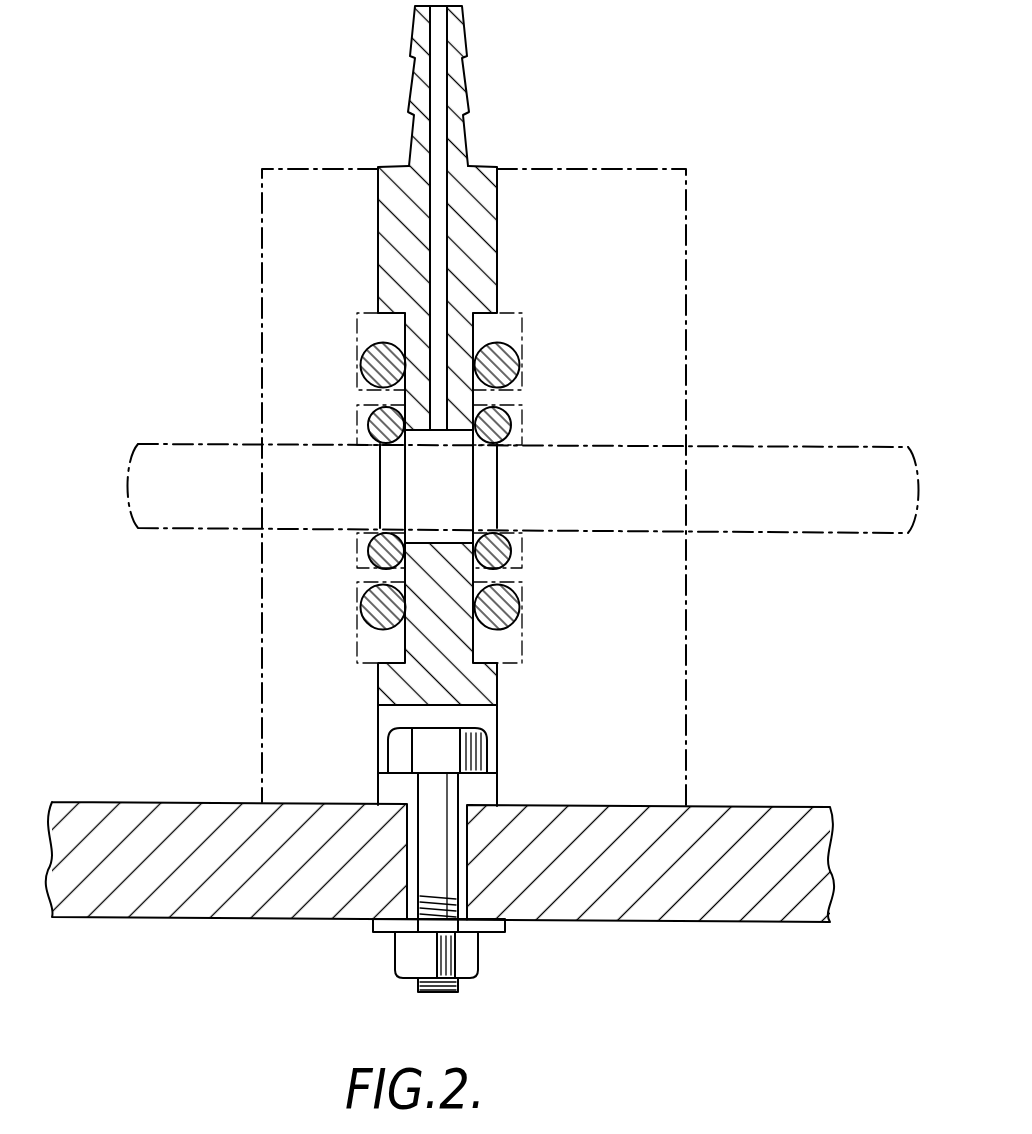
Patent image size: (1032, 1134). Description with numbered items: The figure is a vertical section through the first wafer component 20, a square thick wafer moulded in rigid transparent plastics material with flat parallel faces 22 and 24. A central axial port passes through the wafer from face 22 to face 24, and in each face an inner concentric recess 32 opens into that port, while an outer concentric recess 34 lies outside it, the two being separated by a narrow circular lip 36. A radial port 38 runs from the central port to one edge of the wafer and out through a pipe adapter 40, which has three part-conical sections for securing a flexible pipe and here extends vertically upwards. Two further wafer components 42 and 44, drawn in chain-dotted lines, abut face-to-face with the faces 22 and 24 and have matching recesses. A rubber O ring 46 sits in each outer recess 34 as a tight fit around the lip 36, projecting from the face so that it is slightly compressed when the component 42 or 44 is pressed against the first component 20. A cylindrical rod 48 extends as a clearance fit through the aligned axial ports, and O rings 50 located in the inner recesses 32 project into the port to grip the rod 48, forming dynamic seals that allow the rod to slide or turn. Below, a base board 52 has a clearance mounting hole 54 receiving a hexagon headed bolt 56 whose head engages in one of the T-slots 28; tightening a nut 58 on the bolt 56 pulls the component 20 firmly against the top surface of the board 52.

The first wafer component 20 is at (498, 240).
The face 22 is at (378, 266).
The face 24 is at (497, 268).
The T-slot 28 is at (380, 723).
The inner concentric recess 32 is at (523, 437).
The outer concentric recess 34 is at (360, 325).
The lip 36 is at (520, 402).
The radial port 38 is at (445, 142).
The pipe adapter 40 is at (457, 43).
The wafer component 42 is at (262, 218).
The wafer component 44 is at (686, 238).
The O ring 46 is at (366, 385).
The rod 48 is at (787, 477).
The O ring 50 is at (372, 432).
The base board 52 is at (763, 838).
The clearance mounting hole 54 is at (457, 878).
The hexagon headed bolt 56 is at (447, 790).
The nut 58 is at (395, 960).